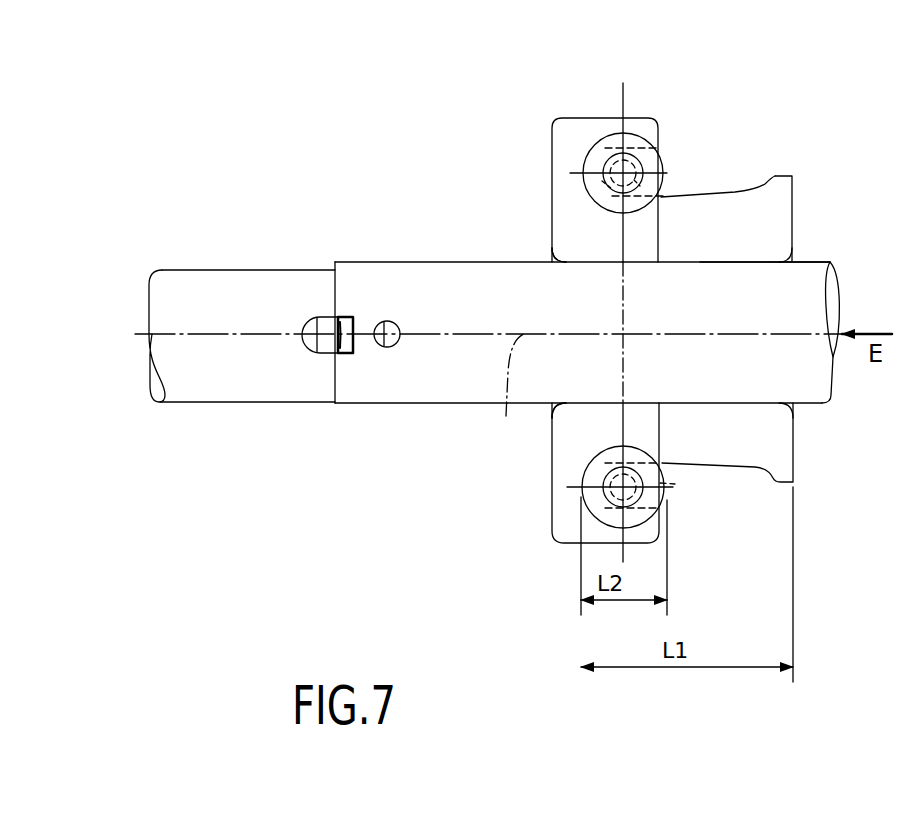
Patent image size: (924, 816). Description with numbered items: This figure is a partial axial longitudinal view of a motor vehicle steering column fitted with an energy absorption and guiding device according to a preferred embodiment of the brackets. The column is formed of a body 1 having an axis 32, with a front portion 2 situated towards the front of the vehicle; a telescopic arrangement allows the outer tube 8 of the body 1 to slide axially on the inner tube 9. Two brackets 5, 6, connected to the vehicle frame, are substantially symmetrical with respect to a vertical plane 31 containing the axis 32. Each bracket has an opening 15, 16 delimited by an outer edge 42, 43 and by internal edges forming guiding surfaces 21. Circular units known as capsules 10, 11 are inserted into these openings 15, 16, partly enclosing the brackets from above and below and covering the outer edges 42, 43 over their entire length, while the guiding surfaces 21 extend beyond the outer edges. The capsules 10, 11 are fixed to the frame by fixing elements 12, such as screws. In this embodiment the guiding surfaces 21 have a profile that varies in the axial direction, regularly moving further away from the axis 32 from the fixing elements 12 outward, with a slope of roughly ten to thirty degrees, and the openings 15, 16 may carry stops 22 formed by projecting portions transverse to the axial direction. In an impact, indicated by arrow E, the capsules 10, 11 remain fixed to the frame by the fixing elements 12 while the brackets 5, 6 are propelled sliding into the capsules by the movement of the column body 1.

The body 1 is at (427, 260).
The front portion 2 is at (254, 268).
The bracket 5 is at (597, 230).
The bracket 6 is at (603, 423).
The outer tube 8 is at (399, 407).
The inner tube 9 is at (255, 405).
The capsule 10 is at (658, 150).
The capsule 11 is at (648, 497).
The fixing element 12 is at (583, 197).
The opening 15 is at (655, 185).
The opening 16 is at (675, 484).
The guiding surface 21 is at (747, 190).
The stop 22 is at (785, 176).
The vertical plane 31 is at (752, 334).
The axis 32 is at (506, 416).
The outer edge 42 is at (612, 120).
The outer edge 43 is at (605, 532).